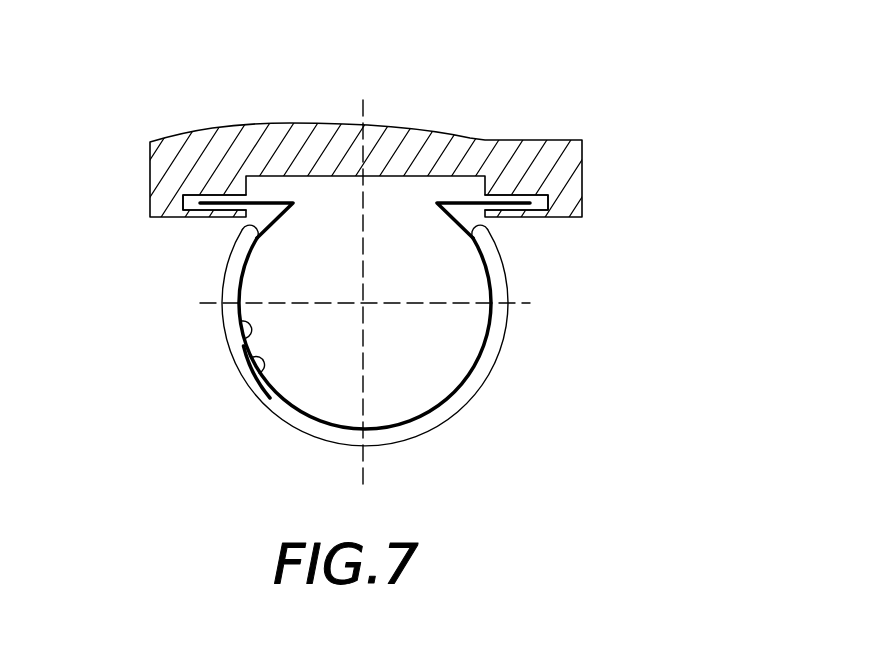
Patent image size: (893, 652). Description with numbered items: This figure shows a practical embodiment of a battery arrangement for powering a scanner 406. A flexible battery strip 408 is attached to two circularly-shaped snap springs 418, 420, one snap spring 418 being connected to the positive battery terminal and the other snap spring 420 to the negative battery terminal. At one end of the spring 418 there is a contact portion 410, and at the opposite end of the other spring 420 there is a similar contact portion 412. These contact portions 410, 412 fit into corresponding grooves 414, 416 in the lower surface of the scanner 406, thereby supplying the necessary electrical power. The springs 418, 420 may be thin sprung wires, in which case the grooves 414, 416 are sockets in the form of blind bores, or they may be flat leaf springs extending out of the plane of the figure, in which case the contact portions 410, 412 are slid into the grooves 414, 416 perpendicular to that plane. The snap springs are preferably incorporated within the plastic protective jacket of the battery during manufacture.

The scanner 406 is at (428, 132).
The flexible battery strip 408 is at (506, 333).
The contact portion 410 is at (280, 207).
The contact portion 412 is at (470, 208).
The groove 414 is at (193, 219).
The groove 416 is at (582, 182).
The snap spring 418 is at (257, 382).
The snap spring 420 is at (244, 326).